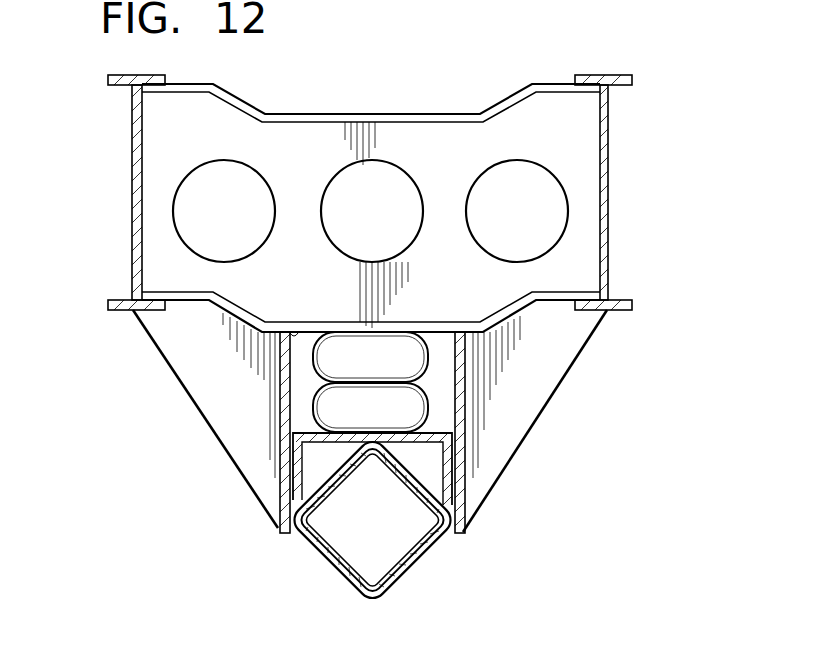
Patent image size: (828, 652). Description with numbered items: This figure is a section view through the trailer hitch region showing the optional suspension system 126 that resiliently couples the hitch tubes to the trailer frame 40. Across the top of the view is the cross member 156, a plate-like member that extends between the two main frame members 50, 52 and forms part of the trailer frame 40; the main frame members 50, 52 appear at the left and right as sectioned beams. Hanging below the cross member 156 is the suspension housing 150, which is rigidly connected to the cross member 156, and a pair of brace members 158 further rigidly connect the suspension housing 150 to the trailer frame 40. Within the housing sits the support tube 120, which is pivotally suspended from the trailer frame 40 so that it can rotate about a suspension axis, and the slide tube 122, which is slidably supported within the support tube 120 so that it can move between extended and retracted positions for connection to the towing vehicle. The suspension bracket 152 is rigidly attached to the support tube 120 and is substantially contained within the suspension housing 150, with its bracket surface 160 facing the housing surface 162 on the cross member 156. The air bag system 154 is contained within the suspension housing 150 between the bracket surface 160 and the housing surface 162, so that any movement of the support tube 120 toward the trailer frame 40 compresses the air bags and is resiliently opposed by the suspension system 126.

The trailer frame 40 is at (647, 120).
The main frame member 50 is at (135, 182).
The main frame member 52 is at (605, 183).
The support tube 120 is at (430, 550).
The slide tube 122 is at (417, 563).
The suspension system 126 is at (588, 418).
The suspension housing 150 is at (293, 438).
The suspension bracket 152 is at (295, 458).
The air bag system 154 is at (440, 388).
The cross member 156 is at (432, 148).
The brace members 158 is at (205, 375).
The bracket surface 160 is at (283, 410).
The housing surface 162 is at (305, 340).